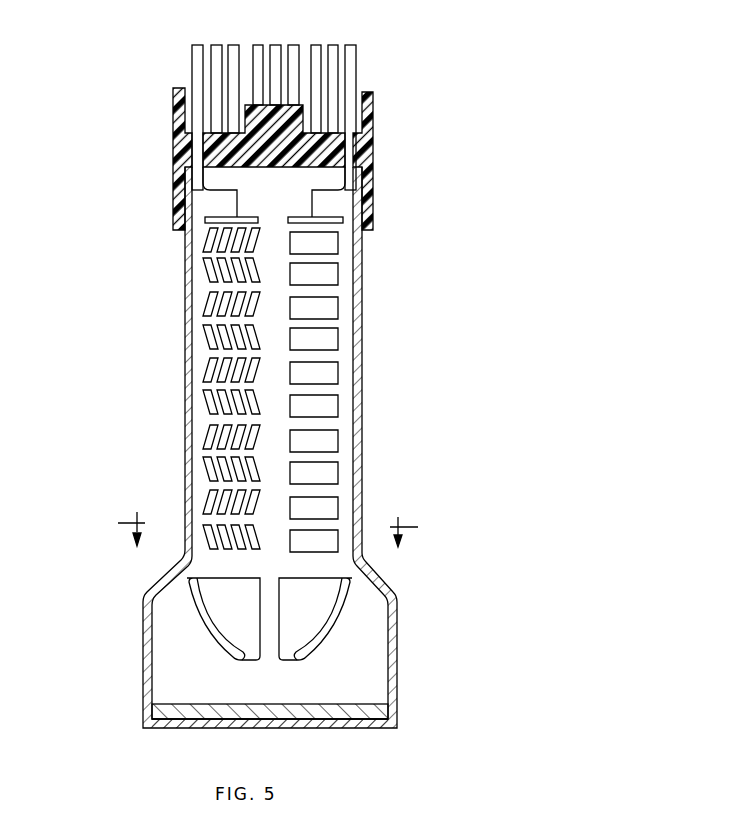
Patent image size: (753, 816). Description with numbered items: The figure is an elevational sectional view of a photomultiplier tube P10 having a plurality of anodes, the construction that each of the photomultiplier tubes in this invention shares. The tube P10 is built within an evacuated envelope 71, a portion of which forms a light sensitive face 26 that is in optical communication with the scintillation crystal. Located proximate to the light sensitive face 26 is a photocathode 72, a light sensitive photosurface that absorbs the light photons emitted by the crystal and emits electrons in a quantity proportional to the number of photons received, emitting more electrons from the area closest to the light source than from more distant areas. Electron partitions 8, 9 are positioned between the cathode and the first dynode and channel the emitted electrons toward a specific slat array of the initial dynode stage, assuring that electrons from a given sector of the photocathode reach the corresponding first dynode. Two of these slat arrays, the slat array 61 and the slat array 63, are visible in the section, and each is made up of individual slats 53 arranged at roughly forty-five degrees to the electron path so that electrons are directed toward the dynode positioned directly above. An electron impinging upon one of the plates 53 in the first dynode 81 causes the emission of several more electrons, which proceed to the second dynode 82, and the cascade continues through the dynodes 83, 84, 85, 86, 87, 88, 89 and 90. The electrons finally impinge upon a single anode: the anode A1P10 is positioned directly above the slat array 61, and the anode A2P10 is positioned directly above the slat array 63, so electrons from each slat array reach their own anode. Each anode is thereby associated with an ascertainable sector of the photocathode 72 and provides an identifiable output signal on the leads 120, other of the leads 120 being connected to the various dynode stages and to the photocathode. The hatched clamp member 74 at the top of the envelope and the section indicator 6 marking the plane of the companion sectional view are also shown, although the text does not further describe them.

The leads 120 is at (355, 67).
The clamp ring 74 is at (373, 143).
The anode A1P10 is at (210, 214).
The anode A2P10 is at (330, 214).
The dynode 90 is at (205, 238).
The dynode 89 is at (205, 275).
The dynode 88 is at (338, 304).
The dynode 87 is at (338, 342).
The dynode 86 is at (338, 377).
The dynode 85 is at (205, 398).
The dynode 84 is at (205, 432).
The dynode 83 is at (205, 473).
The second dynode 82 is at (337, 498).
The slat array 63 is at (308, 527).
The first dynode 81 is at (337, 548).
The slats 53 is at (232, 527).
The slat array 61 is at (232, 560).
The section line 6- 6 is at (269, 529).
The photomultiplier tube P10 is at (392, 327).
The evacuated envelope 71 is at (143, 651).
The photocathode 72 is at (380, 710).
The light sensitive face 26 is at (337, 727).
The electron partition 8 is at (223, 619).
The electron partition 9 is at (315, 619).